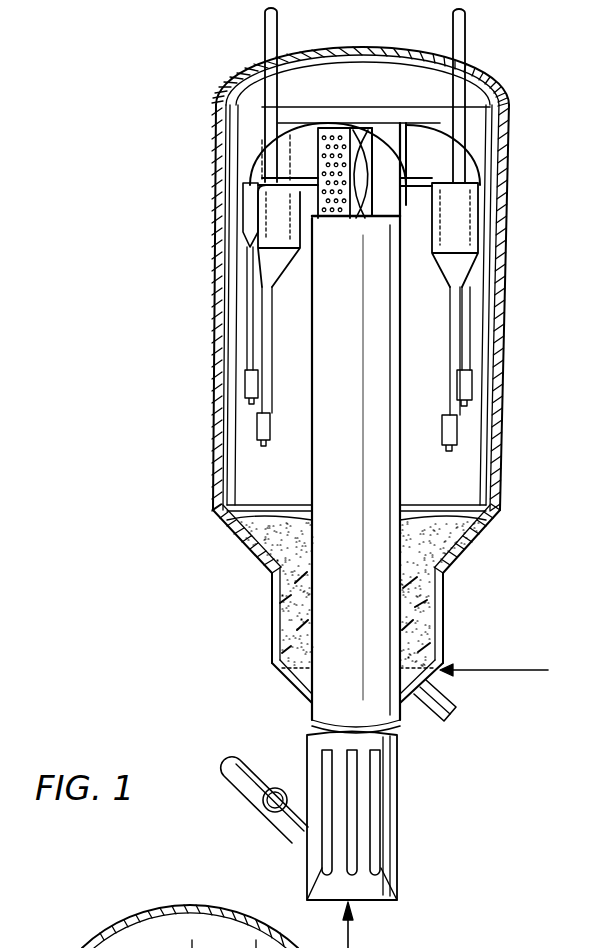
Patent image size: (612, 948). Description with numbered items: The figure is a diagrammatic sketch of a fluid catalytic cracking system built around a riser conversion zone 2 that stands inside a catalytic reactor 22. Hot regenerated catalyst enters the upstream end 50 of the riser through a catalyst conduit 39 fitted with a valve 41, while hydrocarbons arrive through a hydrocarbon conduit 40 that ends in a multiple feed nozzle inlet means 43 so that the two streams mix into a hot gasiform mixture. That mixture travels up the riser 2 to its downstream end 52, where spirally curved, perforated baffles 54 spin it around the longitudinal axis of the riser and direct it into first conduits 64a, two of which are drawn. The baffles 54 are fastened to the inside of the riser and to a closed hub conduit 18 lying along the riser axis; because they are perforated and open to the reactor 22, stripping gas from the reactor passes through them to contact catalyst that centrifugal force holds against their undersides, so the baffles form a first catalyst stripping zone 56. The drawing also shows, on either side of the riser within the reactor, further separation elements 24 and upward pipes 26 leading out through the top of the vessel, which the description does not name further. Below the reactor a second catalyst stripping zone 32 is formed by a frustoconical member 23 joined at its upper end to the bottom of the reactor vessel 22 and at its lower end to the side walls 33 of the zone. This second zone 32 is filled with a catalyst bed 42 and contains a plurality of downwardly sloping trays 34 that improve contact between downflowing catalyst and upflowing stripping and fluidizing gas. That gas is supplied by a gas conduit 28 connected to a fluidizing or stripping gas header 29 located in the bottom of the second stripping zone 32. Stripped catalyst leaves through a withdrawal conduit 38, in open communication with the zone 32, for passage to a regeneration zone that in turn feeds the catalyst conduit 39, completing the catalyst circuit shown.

The riser conversion zone 2 is at (312, 714).
The closed conduit (hub) 18 is at (331, 230).
The catalytic reactor 22 is at (214, 328).
The frustoconical member 23 is at (243, 540).
The cyclone separators 24 is at (243, 210).
The gas outlet pipes 26 is at (265, 28).
The gas conduit 28 is at (500, 672).
The fluidizing or stripping gas header 29 is at (440, 668).
The second catalyst stripping zone 32 is at (272, 630).
The side walls of second stripping zone 33 is at (272, 660).
The downwardly sloping trays 34 is at (272, 610).
The stripped catalyst withdrawal conduit 38 is at (456, 706).
The catalyst conduit 39 is at (238, 784).
The hydrocarbon conduit 40 is at (348, 940).
The valve 41 is at (272, 812).
The catalyst bed 42 is at (455, 540).
The multiple feed nozzle inlet means 43 is at (330, 840).
The upstream end 50 is at (397, 755).
The downstream end 52 is at (430, 145).
The perforated baffles 54 is at (358, 140).
The first catalyst stripping zone 56 is at (328, 135).
The first conduit 64a is at (288, 130).